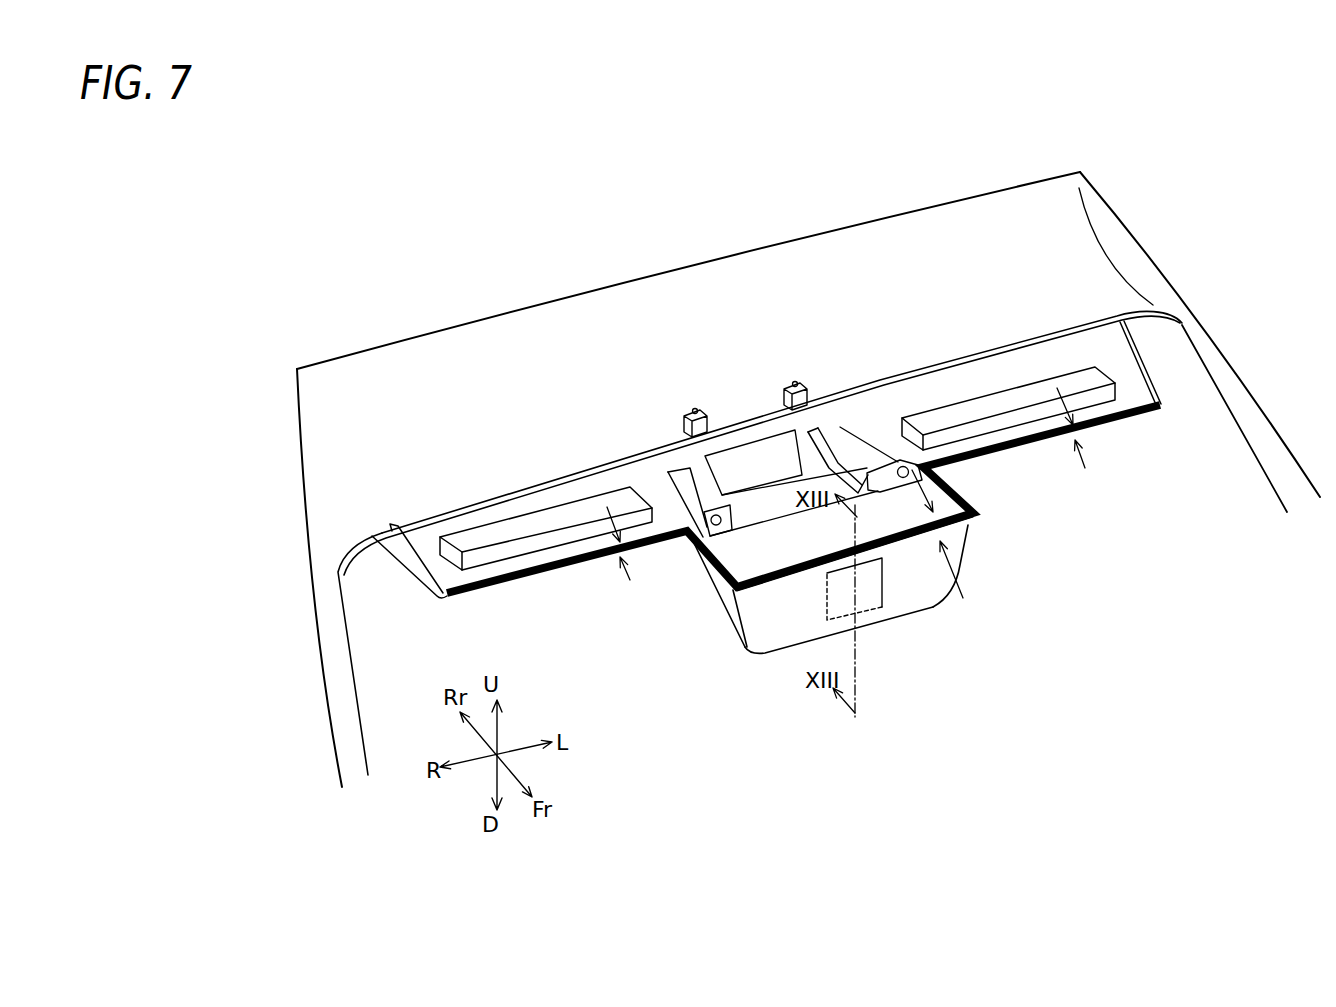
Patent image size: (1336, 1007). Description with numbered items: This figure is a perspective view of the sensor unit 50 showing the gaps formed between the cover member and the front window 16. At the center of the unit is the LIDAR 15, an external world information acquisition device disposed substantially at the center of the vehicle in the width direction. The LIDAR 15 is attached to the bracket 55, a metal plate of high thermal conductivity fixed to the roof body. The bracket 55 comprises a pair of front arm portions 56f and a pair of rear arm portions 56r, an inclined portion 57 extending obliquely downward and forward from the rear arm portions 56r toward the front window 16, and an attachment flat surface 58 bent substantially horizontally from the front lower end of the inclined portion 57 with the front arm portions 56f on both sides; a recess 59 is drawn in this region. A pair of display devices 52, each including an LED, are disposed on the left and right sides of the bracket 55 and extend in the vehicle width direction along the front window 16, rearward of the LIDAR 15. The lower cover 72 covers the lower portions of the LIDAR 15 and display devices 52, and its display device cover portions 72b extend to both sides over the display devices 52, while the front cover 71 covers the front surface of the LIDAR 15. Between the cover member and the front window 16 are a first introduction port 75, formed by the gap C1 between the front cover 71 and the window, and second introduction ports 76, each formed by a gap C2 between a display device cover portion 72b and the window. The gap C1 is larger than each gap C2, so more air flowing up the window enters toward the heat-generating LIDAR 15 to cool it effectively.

The front window 16 is at (680, 727).
The display device cover portion 72b is at (1013, 365).
The second introduction port 76 is at (585, 560).
The front arm portion 56f is at (692, 545).
The display device 52 is at (517, 547).
The bracket 55 is at (665, 483).
The inclined portion 57 is at (703, 473).
The recess 59 is at (793, 457).
The rear arm portion 56r is at (790, 383).
The attachment flat surface 58 is at (835, 455).
The lower cover 72 is at (723, 603).
The front cover 71 is at (787, 630).
The first introduction port 75 is at (945, 528).
The LIDAR 15 is at (870, 592).
The sensor unit 50 is at (953, 633).
The gap C1 is at (954, 541).
The gap C2 is at (864, 491).